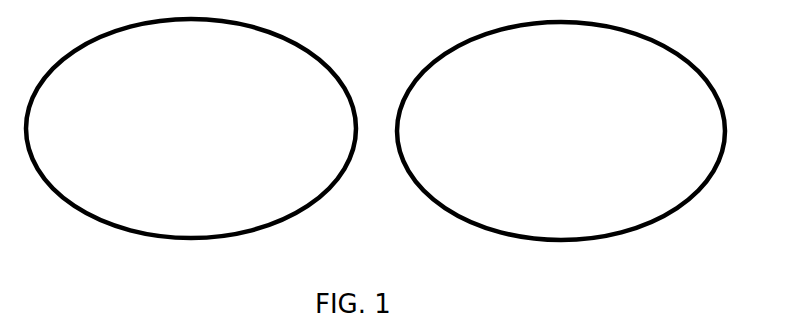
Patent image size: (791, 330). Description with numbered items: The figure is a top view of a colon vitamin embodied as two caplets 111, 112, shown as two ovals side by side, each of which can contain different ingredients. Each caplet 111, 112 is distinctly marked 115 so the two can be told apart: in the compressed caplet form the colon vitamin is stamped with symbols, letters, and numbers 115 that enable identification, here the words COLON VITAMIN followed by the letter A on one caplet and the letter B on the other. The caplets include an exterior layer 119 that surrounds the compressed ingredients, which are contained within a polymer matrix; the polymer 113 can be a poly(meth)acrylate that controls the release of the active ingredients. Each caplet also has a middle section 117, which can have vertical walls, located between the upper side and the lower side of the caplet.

The caplet 111 is at (342, 70).
The caplet 112 is at (712, 70).
The polymer 113 is at (100, 84).
The marking 115 is at (258, 112).
The middle section 117 is at (82, 212).
The exterior layer 119 is at (310, 212).